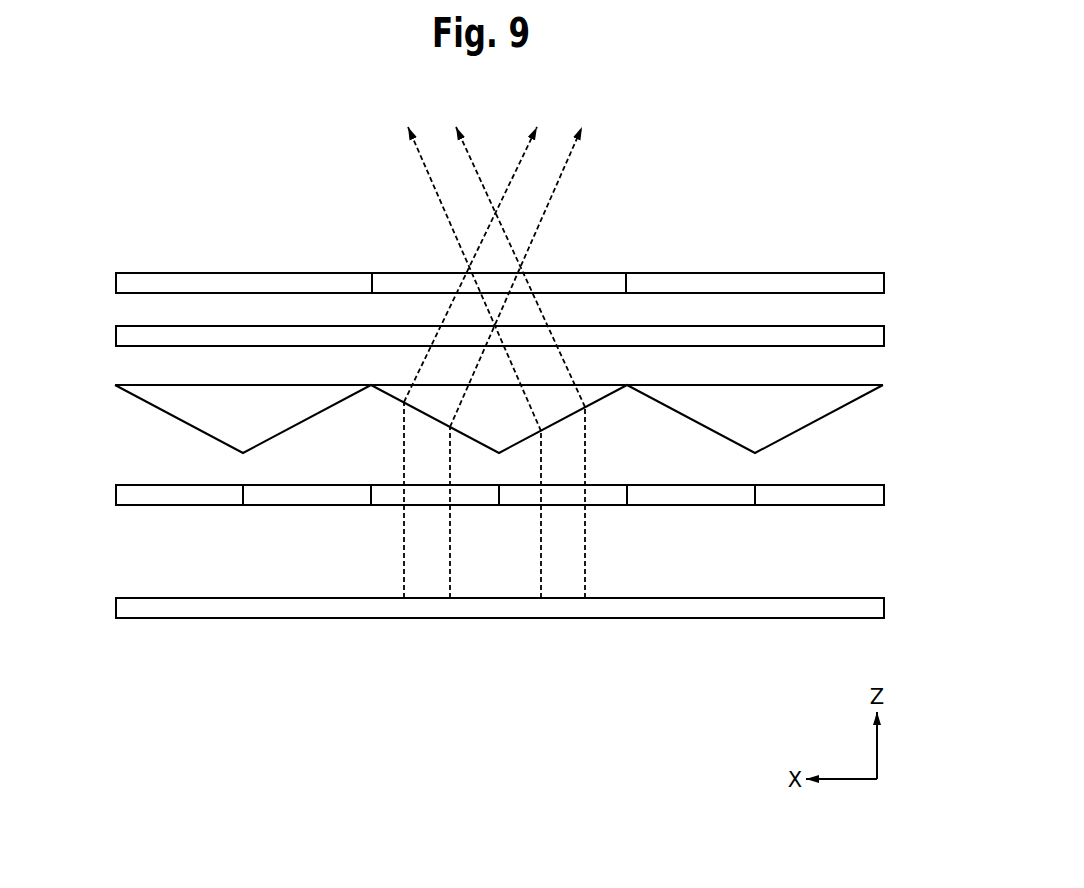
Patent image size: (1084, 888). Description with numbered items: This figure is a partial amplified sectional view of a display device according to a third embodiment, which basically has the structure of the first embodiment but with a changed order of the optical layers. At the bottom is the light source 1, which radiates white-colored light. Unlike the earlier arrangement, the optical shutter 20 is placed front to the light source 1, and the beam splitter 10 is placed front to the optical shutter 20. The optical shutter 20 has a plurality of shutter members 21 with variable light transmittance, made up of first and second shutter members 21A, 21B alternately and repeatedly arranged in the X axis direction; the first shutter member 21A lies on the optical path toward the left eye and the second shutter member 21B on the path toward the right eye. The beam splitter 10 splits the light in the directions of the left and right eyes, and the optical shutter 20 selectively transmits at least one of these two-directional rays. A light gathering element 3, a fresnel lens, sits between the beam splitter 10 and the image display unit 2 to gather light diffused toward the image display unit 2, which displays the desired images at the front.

The light source 1 is at (116, 606).
The image display unit 2 is at (817, 272).
The light gathering element 3 is at (116, 334).
The beam splitter 10 is at (828, 418).
The optical shutter 20 is at (775, 508).
The shutter members 21 is at (243, 535).
The first shutter member 21A is at (192, 498).
The second shutter member 21B is at (307, 516).